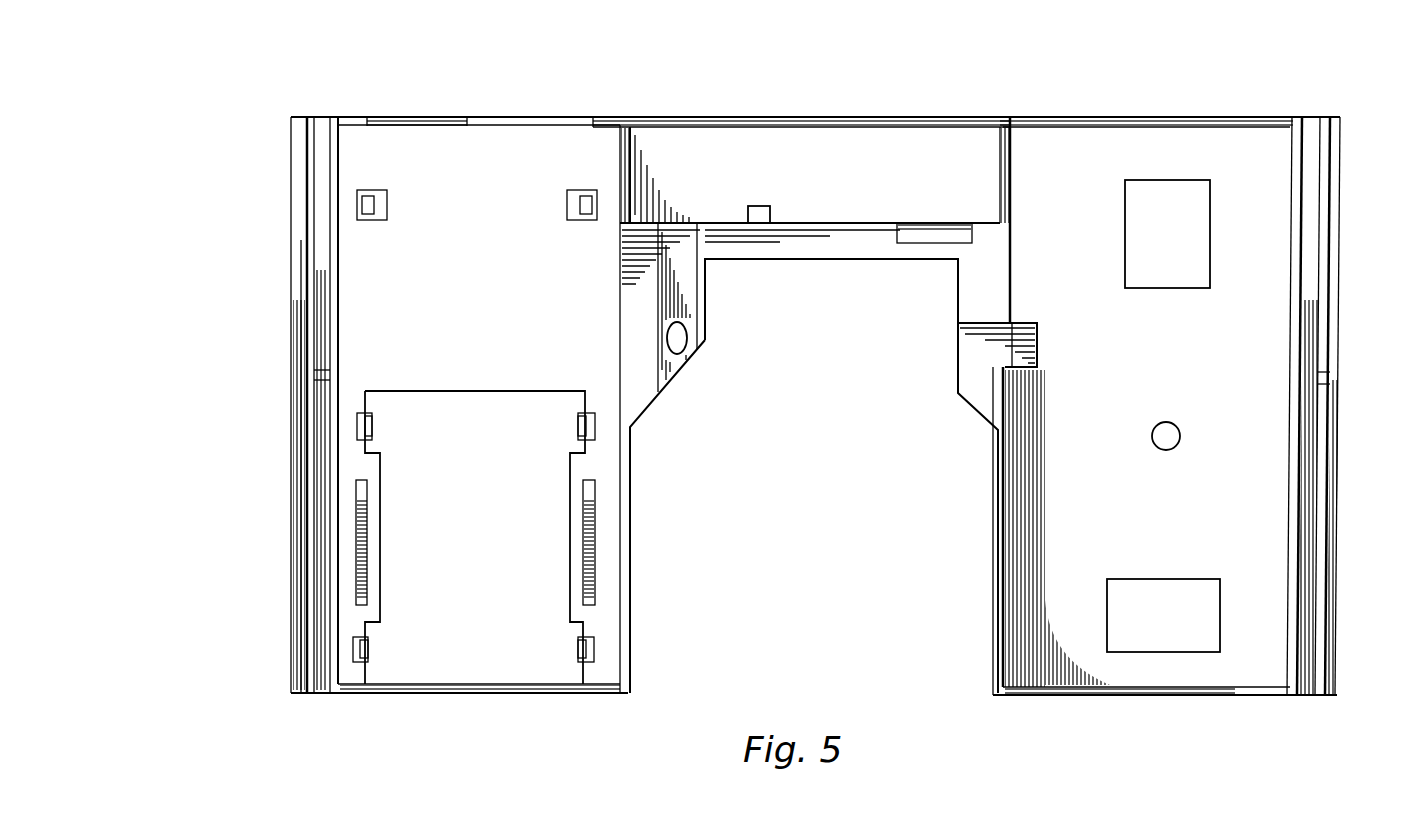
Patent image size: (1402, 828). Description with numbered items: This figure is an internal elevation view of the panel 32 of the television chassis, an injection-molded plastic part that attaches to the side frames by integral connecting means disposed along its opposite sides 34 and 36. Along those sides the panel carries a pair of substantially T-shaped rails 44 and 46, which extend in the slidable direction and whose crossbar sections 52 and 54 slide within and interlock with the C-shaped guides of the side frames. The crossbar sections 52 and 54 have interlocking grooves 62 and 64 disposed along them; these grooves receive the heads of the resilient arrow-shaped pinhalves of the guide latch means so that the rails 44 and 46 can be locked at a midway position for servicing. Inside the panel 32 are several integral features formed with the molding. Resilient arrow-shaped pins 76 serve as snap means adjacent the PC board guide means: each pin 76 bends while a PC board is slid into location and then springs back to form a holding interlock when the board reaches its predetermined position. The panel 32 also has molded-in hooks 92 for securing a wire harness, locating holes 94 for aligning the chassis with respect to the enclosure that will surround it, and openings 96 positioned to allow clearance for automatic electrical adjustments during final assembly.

The panel 32 is at (844, 181).
The side of panel 34 is at (1305, 130).
The side of panel 36 is at (340, 124).
The T-shaped rail 44 is at (291, 130).
The T-shaped rail 46 is at (1342, 150).
The crossbar section 52 is at (308, 118).
The crossbar section 54 is at (1325, 122).
The interlocking groove 62 is at (302, 380).
The interlocking groove 64 is at (1330, 378).
The resilient arrow-shaped pin 76 is at (567, 206).
The molded-in hook 92 is at (752, 206).
The locating hole 94 is at (1175, 288).
The opening 96 is at (470, 391).